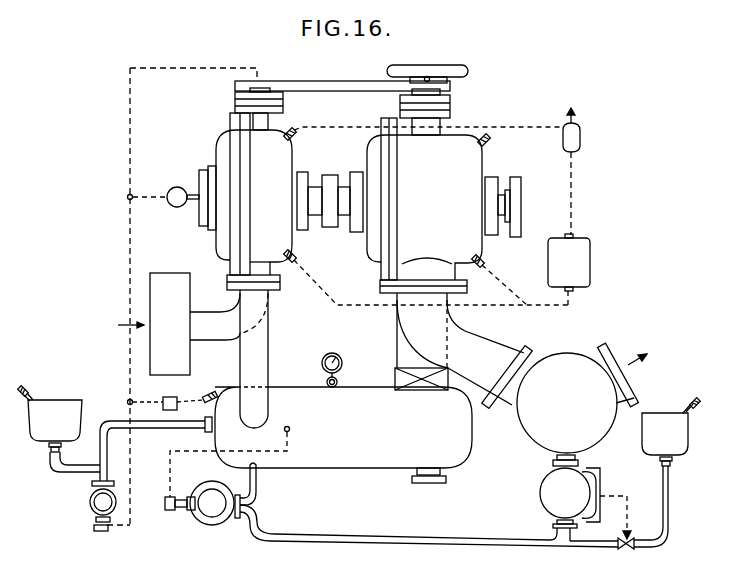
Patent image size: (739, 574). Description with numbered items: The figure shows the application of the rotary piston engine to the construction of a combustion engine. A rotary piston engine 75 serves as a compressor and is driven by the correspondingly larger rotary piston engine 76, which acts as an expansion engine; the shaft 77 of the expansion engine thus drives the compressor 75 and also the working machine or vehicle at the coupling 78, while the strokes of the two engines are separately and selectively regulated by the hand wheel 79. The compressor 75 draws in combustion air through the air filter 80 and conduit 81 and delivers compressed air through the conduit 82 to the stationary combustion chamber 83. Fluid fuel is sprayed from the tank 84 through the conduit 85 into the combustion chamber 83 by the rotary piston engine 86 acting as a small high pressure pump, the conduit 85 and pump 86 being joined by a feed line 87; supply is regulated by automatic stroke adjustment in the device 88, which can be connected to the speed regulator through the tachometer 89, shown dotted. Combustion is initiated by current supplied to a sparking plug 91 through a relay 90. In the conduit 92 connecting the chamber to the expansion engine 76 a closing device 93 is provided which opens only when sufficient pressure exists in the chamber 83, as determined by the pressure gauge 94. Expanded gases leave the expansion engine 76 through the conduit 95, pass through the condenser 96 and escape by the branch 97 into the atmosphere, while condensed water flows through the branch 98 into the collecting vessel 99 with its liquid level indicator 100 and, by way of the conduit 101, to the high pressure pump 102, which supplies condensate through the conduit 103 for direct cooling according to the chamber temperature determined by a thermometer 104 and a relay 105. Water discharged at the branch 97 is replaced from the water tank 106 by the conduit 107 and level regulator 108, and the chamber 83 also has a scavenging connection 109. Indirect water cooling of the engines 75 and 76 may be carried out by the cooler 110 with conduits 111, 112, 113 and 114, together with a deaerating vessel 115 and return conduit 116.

The rotary piston engine 75 is at (223, 137).
The rotary piston engine 76 is at (369, 148).
The shaft 77 is at (343, 210).
The coupling 78 is at (514, 205).
The hand wheel 79 is at (462, 66).
The air filter 80 is at (163, 280).
The conduit 81 is at (197, 325).
The conduit 82 is at (253, 357).
The combustion chamber 83 is at (343, 427).
The tank 84 is at (55, 418).
The conduit 85 is at (76, 472).
The rotary piston engine 86 is at (91, 500).
The feed line 87 is at (185, 430).
The device 88 is at (106, 530).
The tachometer 89 is at (173, 190).
The relay 90 is at (163, 398).
The sparking plug 91 is at (209, 391).
The conduit 92 is at (404, 343).
The closing device 93 is at (405, 382).
The pressure gauge 94 is at (331, 353).
The conduit 95 is at (467, 338).
The condenser 96 is at (567, 387).
The branch 97 is at (618, 348).
The branch 98 is at (553, 457).
The collecting vessel 99 is at (556, 493).
The liquid level indicator 100 is at (600, 490).
The conduit 101 is at (405, 539).
The high pressure pump 102 is at (213, 520).
The conduit 103 is at (254, 483).
The thermometer 104 is at (290, 431).
The relay 105 is at (169, 512).
The water tank 106 is at (665, 438).
The conduit 107 is at (670, 513).
The level regulator 108 is at (627, 548).
The scavenging connection 109 is at (413, 482).
The cooler 110 is at (573, 268).
The conduit 111 is at (317, 284).
The conduit 112 is at (495, 272).
The conduit 113 is at (366, 122).
The conduit 114 is at (490, 133).
The deaerating vessel 115 is at (580, 128).
The return conduit 116 is at (574, 178).